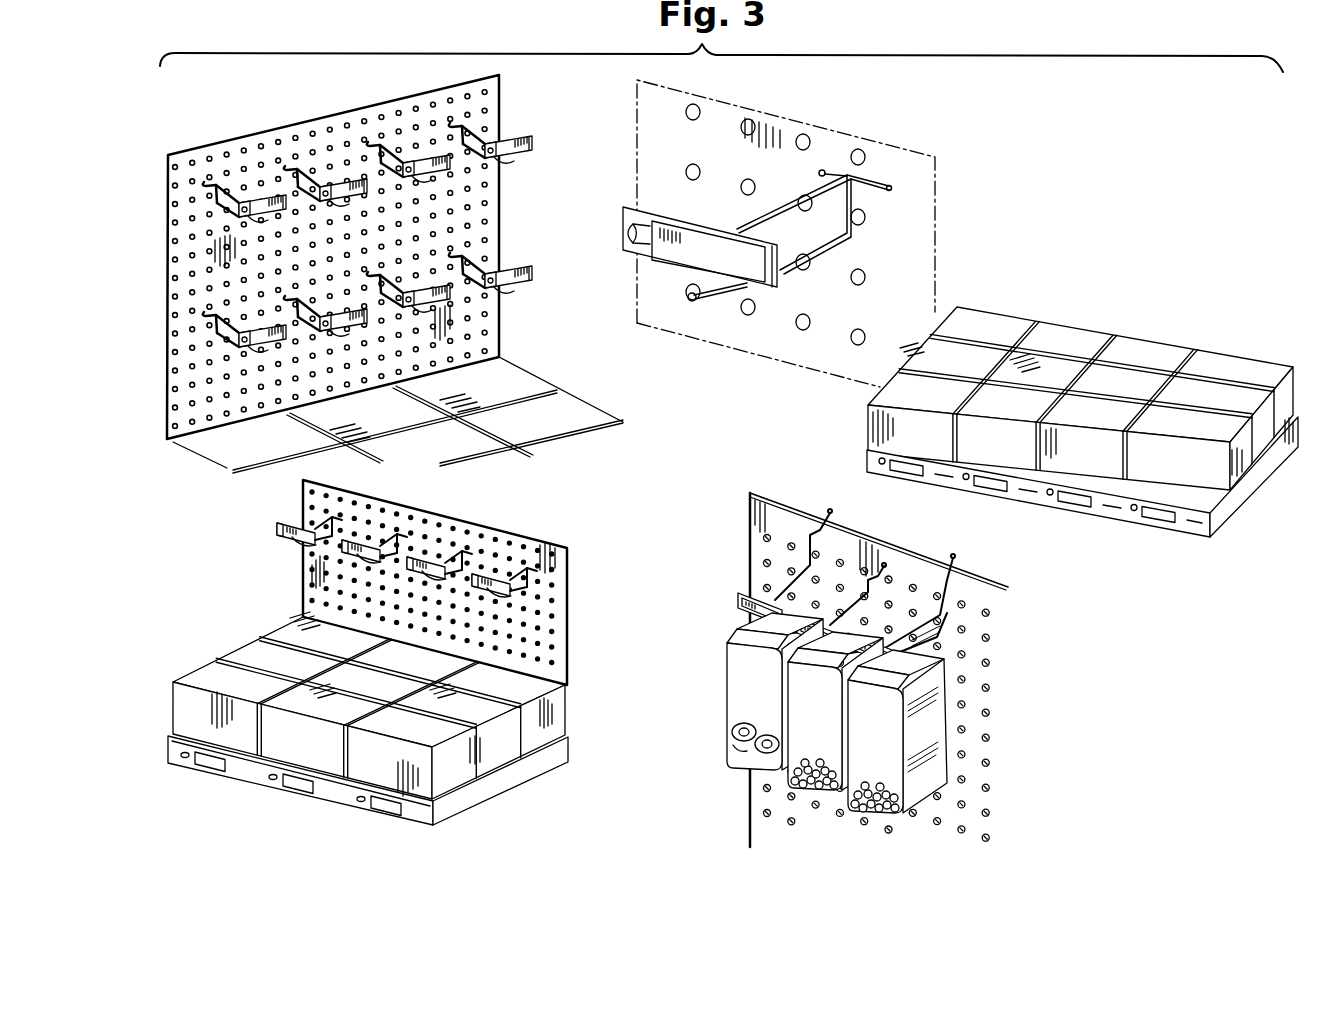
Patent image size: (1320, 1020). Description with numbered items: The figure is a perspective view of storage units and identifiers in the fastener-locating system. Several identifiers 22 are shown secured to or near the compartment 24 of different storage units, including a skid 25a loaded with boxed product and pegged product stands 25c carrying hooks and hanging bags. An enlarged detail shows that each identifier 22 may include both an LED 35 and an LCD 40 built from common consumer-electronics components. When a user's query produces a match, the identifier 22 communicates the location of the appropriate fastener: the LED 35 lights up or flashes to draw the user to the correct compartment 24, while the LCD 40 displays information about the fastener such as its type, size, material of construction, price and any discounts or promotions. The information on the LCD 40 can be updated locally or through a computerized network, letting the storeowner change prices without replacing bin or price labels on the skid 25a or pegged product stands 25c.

The identifier 22 is at (425, 160).
The compartment 24 is at (315, 322).
The skid 25a is at (1130, 330).
The pegged product stand 25c is at (514, 88).
The LED 35 is at (630, 237).
The LCD 40 is at (677, 252).